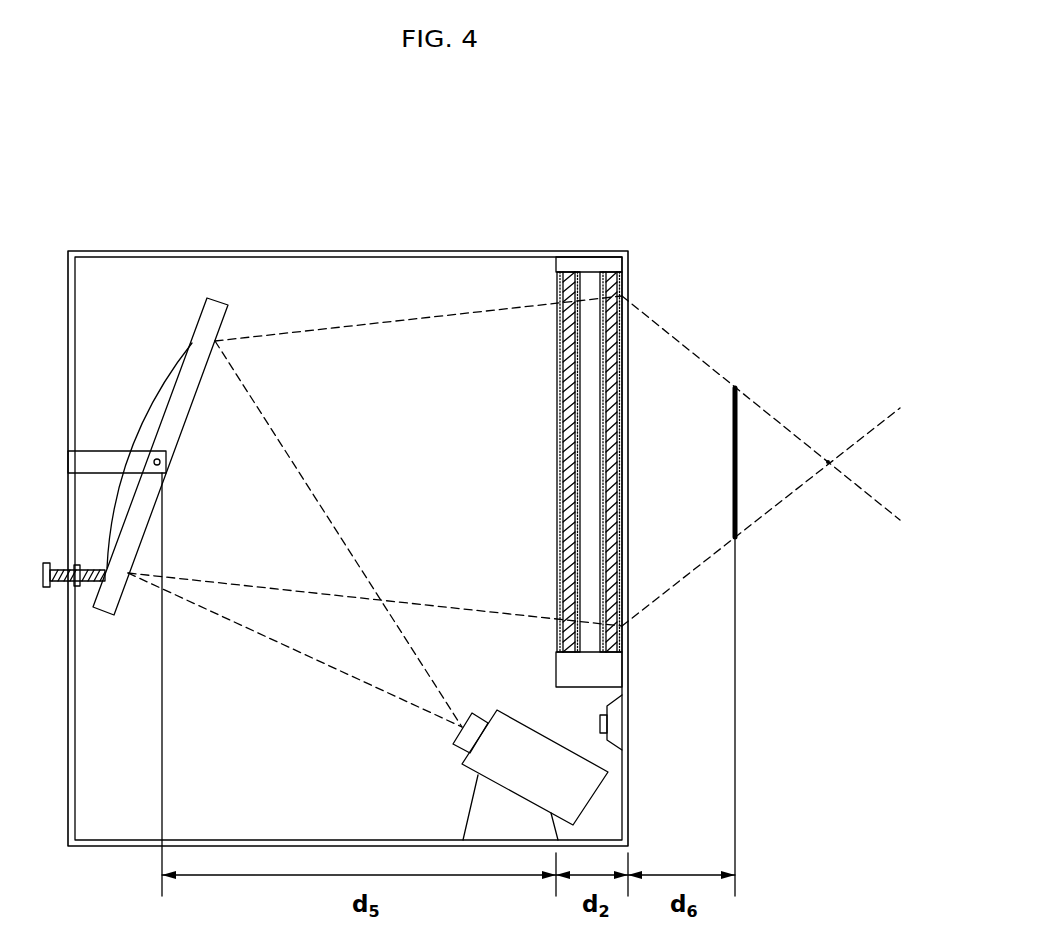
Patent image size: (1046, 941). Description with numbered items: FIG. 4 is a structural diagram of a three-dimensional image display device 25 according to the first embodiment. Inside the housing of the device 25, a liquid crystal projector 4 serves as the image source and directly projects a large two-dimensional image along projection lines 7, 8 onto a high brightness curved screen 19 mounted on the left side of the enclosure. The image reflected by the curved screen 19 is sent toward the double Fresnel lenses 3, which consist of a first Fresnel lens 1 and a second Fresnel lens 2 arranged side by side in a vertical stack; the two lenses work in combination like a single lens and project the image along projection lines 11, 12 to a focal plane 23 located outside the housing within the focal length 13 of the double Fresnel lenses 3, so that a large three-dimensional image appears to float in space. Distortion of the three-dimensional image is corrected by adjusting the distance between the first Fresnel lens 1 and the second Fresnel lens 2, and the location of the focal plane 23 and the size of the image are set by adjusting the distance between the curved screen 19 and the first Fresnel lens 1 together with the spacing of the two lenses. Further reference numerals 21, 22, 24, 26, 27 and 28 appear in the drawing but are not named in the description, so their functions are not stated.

The first Fresnel lens 1 is at (557, 355).
The second Fresnel lens 2 is at (612, 291).
The double Fresnel lenses 3 is at (589, 262).
The liquid crystal projector 4 is at (462, 763).
The projection line 7 is at (262, 640).
The projection line 8 is at (320, 489).
The projection line 11 is at (880, 422).
The projection line 12 is at (876, 504).
The focal length 13 is at (828, 460).
The high brightness curved screen 19 is at (222, 300).
The light path to panel 21 is at (213, 580).
The light path from mirror to panel 22 is at (379, 318).
The focal plane 23 is at (738, 390).
The bottom support 24 is at (612, 670).
The three-dimensional image display device 25 is at (88, 848).
The sensor 26 is at (612, 722).
The adjusting screw 27 is at (60, 563).
The mirror support arm 28 is at (75, 458).